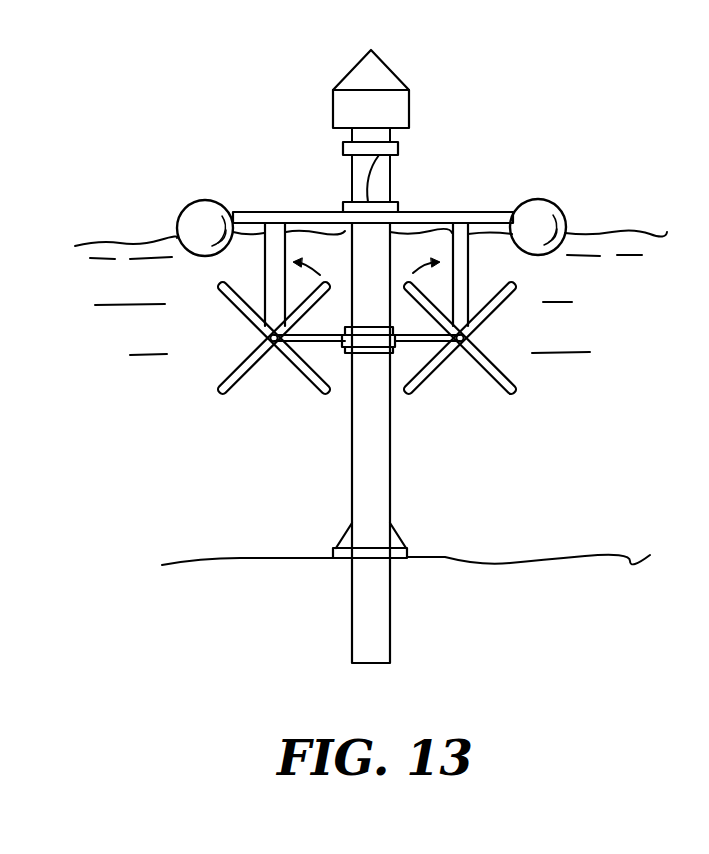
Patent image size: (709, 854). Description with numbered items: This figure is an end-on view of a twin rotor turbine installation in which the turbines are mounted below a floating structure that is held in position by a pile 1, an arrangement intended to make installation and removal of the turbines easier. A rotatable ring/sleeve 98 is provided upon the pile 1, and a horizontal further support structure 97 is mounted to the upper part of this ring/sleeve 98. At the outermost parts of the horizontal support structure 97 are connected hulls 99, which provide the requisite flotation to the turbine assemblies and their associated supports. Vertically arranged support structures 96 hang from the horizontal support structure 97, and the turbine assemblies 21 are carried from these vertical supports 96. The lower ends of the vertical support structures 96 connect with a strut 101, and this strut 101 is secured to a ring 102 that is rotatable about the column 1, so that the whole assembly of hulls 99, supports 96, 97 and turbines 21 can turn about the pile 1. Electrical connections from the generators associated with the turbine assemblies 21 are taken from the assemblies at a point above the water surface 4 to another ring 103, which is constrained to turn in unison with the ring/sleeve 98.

The pile 1 is at (380, 488).
The water surface 4 is at (608, 238).
The turbine 21 is at (228, 350).
The vertically arranged support structure 96 is at (272, 253).
The horizontal further support structure 97 is at (322, 222).
The rotatable ring/sleeve 98 is at (398, 208).
The hull 99 is at (197, 213).
The strut 101 is at (417, 340).
The ring 102 is at (372, 347).
The ring 103 is at (398, 150).